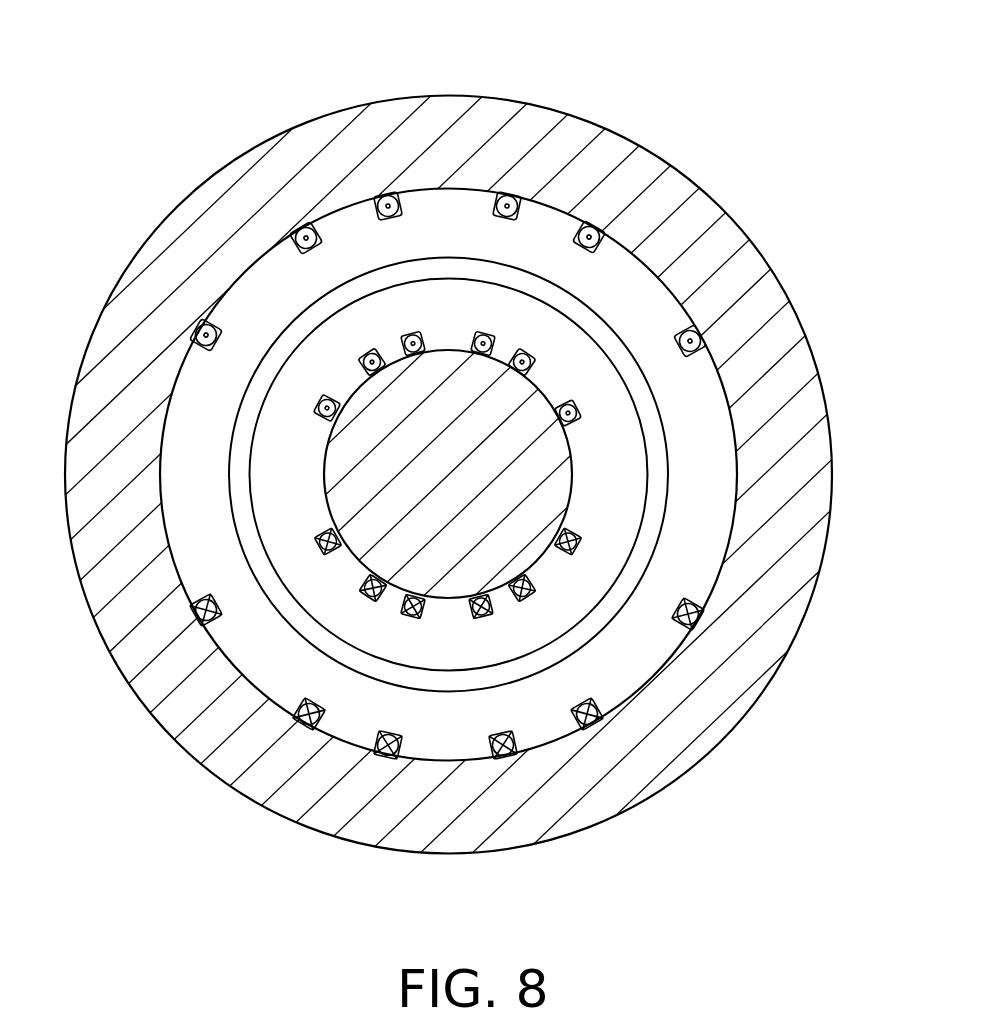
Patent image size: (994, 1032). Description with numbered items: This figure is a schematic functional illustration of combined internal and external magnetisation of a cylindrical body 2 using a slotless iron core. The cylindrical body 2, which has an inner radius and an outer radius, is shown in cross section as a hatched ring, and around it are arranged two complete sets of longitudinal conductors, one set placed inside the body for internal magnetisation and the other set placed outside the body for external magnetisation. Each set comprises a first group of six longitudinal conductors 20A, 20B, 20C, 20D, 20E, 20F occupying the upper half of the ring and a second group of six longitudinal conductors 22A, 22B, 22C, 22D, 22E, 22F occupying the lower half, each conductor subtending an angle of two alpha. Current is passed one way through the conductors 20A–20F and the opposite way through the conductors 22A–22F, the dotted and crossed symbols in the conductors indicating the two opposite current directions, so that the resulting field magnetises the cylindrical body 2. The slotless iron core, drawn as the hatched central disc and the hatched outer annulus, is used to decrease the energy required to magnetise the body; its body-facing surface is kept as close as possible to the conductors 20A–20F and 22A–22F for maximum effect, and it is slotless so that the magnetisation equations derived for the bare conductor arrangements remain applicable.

The cylindrical body 2 is at (602, 622).
The longitudinal conductor 20A is at (200, 327).
The longitudinal conductor 20B is at (300, 222).
The longitudinal conductor 20C is at (384, 194).
The longitudinal conductor 20D is at (508, 195).
The longitudinal conductor 20E is at (590, 228).
The longitudinal conductor 20F is at (695, 332).
The longitudinal conductor 22A is at (202, 623).
The longitudinal conductor 22B is at (305, 727).
The longitudinal conductor 22C is at (385, 757).
The longitudinal conductor 22D is at (502, 758).
The longitudinal conductor 22E is at (592, 727).
The longitudinal conductor 22F is at (700, 620).